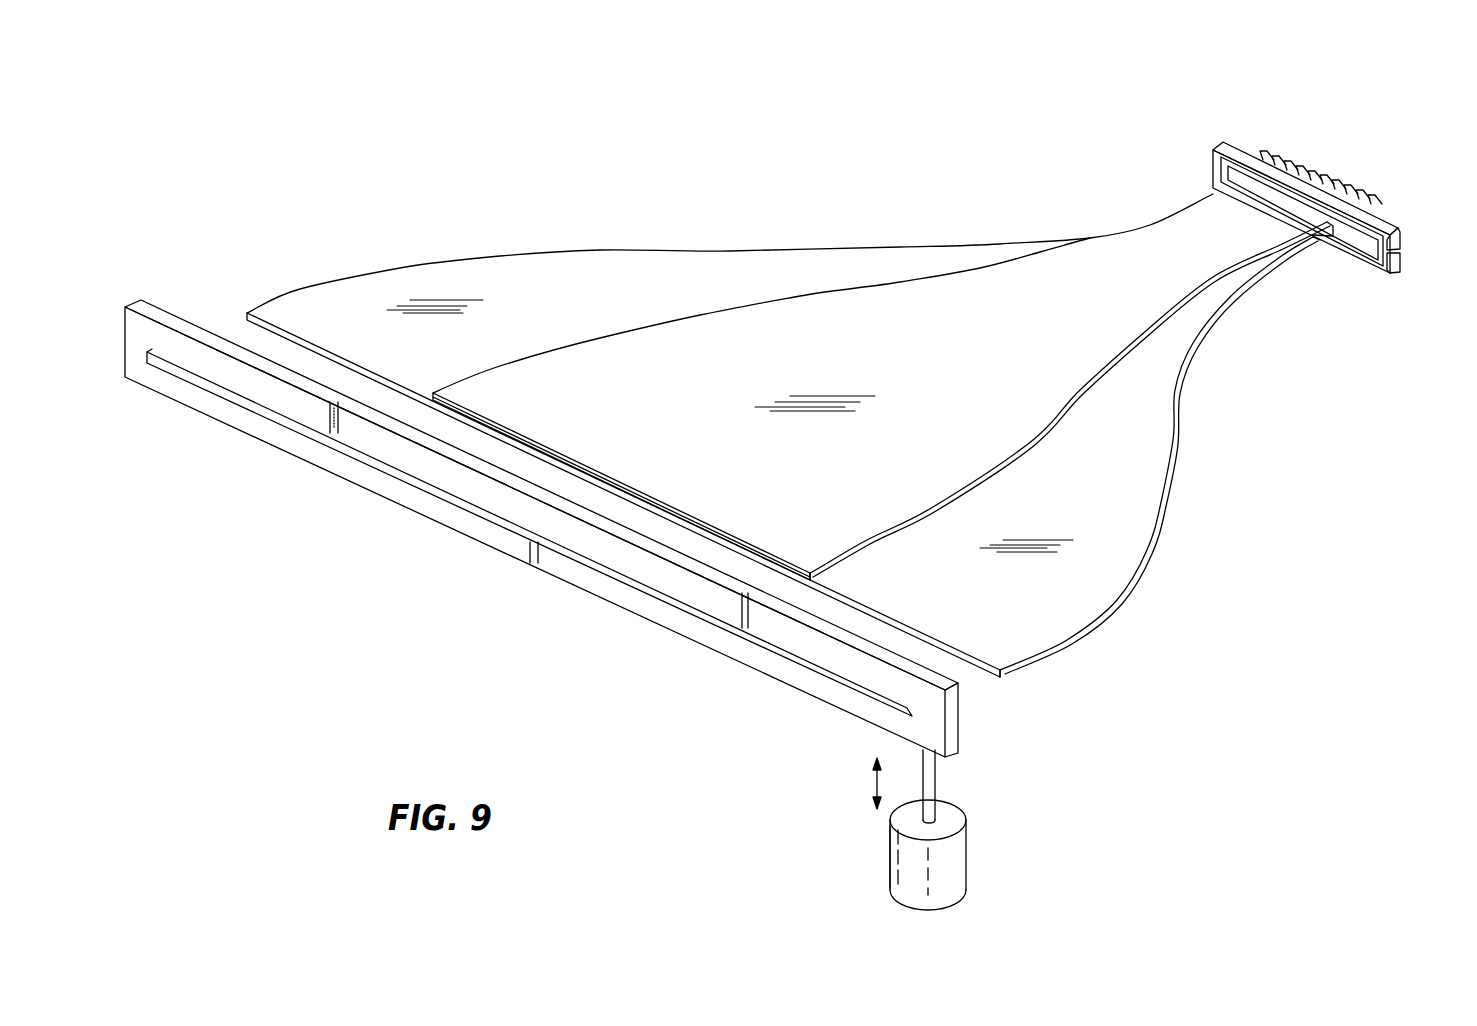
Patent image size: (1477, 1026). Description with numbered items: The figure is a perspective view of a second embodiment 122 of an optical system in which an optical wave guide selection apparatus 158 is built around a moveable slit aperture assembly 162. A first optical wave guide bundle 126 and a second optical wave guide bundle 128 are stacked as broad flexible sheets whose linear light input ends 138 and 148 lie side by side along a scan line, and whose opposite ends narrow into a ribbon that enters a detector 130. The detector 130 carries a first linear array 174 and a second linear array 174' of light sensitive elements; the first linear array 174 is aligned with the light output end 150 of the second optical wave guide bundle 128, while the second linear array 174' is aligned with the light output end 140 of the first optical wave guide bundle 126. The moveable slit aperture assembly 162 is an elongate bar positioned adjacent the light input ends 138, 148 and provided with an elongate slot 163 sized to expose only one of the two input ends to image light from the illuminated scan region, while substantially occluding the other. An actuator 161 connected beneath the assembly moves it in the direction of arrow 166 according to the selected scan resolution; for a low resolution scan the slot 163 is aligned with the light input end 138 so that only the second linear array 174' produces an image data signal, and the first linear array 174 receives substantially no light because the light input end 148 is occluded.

The second embodiment of the optical system 122 is at (453, 103).
The first optical wave guide bundle 126 is at (1170, 529).
The second optical wave guide bundle 128 is at (1040, 452).
The detector 130 is at (1208, 152).
The linear light input end 138 is at (1007, 675).
The light output end 140 is at (1287, 248).
The linear light input end 148 is at (820, 575).
The light output end 150 is at (1313, 240).
The optical wave guide selection apparatus 158 is at (975, 860).
The actuator 161 is at (890, 863).
The moveable slit aperture assembly 162 is at (960, 736).
The elongate slot 163 is at (255, 415).
The arrow 166 is at (873, 785).
The first linear array of light sensitive elements 174 is at (1415, 216).
The second linear array of light sensitive elements 174' is at (1407, 286).